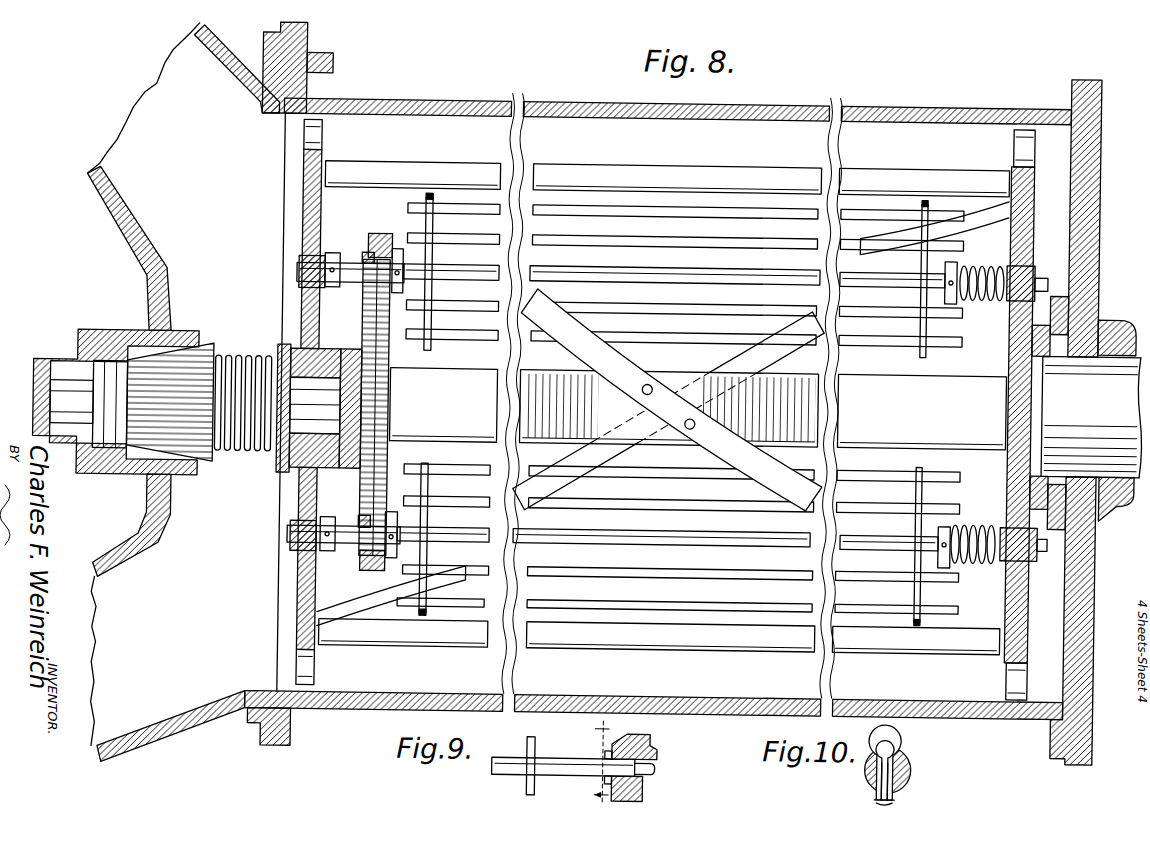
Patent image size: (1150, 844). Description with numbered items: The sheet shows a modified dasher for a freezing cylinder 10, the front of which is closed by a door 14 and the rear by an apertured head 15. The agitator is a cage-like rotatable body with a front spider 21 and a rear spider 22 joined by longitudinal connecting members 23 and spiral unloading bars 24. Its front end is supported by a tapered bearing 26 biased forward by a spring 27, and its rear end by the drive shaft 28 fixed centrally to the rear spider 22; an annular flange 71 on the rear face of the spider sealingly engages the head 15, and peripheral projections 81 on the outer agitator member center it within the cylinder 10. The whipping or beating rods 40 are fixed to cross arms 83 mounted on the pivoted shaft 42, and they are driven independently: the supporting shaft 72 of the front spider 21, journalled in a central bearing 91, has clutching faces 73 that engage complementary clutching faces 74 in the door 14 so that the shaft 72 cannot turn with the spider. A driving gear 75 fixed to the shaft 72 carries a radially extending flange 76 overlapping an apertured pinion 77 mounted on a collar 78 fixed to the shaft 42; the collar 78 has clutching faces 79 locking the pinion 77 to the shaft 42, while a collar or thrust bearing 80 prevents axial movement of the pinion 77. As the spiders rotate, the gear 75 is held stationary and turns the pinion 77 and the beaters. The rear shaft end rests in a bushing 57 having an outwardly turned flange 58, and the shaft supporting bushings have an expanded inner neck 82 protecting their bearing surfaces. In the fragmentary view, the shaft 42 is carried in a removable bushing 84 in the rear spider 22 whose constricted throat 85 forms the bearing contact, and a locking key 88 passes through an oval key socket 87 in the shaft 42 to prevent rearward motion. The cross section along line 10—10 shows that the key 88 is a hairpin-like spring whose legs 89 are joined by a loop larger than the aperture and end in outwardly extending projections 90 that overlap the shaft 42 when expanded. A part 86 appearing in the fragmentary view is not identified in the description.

In FIG. 8, the door 14 is at (123, 227).
In FIG. 8, the apertured head 15 is at (1093, 203).
In FIG. 8, the front supporting spider 21 is at (300, 216).
In FIG. 8, the rear supporting spider 22 is at (1031, 211).
In FIG. 9, the rear supporting spider 22 is at (650, 741).
In FIG. 8, the longitudinal spider connecting members 23 is at (584, 176).
In FIG. 8, the spiral unloading bars 24 is at (578, 346).
In FIG. 8, the tapered bearing 26 is at (205, 350).
In FIG. 8, the spring 27 is at (244, 457).
In FIG. 8, the agitator drive shaft 28 is at (1060, 411).
In FIG. 8, the whipping or beating rods 40 is at (665, 240).
In FIG. 8, the pivoted shaft 42 is at (497, 266).
In FIG. 9, the pivoted shaft 42 is at (548, 760).
In FIG. 8, the bushing 57 is at (1100, 335).
In FIG. 8, the outwardly turned flange 58 is at (1062, 300).
In FIG. 8, the annular flange 71 is at (1035, 311).
In FIG. 8, the supporting shaft 72 is at (300, 368).
In FIG. 8, the clutching faces 73 is at (77, 395).
In FIG. 8, the complementary clutching faces 74 is at (36, 380).
In FIG. 8, the driving gear 75 is at (388, 403).
In FIG. 8, the radially extending flange 76 is at (361, 312).
In FIG. 8, the apertured pinion 77 is at (378, 238).
In FIG. 8, the collar 78 is at (361, 262).
In FIG. 8, the clutching faces 79 is at (372, 283).
In FIG. 8, the thrust bearing collar 80 is at (396, 253).
In FIG. 8, the peripheral projections 81 is at (320, 140).
In FIG. 8, the expanded inner neck 82 is at (1033, 355).
In FIG. 8, the cross arms 83 is at (429, 200).
In FIG. 9, the cross arms 83 is at (530, 783).
In FIG. 9, the removable bushing 84 is at (648, 791).
In FIG. 9, the constricted throat 85 is at (660, 770).
In FIG. 9, the upper lip 86 is at (610, 754).
In FIG. 10, the key socket 87 is at (900, 785).
In FIG. 9, the locking key 88 is at (610, 780).
In FIG. 10, the locking key 88 is at (912, 737).
In FIG. 10, the legs 89 is at (916, 763).
In FIG. 10, the outwardly extending projections 90 is at (880, 797).
In FIG. 8, the central bearing 91 is at (279, 464).
In FIG. 9, the cylinder 10 is at (599, 763).